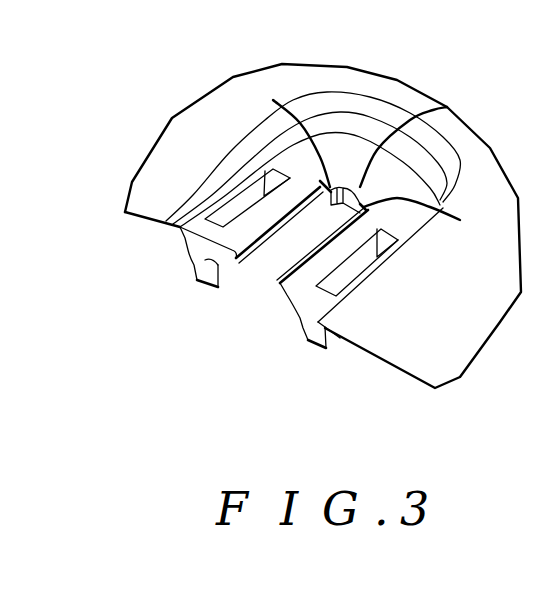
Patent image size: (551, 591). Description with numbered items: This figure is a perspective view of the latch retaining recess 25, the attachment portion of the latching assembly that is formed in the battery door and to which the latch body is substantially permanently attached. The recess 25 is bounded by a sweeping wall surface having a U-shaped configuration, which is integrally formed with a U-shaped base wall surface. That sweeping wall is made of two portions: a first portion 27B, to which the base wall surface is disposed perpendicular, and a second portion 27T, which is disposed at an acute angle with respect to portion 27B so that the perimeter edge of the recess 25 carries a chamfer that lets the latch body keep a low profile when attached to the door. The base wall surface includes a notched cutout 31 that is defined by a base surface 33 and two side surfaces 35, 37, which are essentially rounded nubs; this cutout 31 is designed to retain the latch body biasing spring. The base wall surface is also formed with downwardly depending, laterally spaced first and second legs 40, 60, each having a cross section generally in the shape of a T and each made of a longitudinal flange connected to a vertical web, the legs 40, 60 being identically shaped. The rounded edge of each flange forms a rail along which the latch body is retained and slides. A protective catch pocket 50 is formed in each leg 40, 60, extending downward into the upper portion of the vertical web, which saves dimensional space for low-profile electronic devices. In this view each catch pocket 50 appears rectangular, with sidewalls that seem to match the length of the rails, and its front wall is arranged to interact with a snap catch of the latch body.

The latch retaining recess 25 is at (163, 248).
The second portion of wall surface 27T is at (427, 15).
The first portion of wall surface 27B is at (353, 140).
The notched cutout 31 is at (343, 213).
The base surface 33 is at (447, 107).
The side surface 35 is at (274, 100).
The side surface 37 is at (427, 218).
The first leg 40 is at (200, 266).
The protective catch pocket 50 is at (244, 202).
The second leg 60 is at (317, 327).